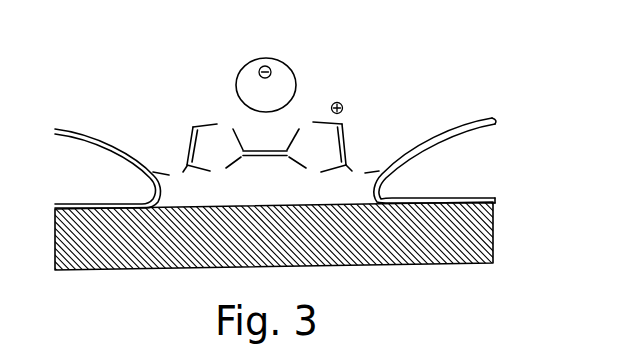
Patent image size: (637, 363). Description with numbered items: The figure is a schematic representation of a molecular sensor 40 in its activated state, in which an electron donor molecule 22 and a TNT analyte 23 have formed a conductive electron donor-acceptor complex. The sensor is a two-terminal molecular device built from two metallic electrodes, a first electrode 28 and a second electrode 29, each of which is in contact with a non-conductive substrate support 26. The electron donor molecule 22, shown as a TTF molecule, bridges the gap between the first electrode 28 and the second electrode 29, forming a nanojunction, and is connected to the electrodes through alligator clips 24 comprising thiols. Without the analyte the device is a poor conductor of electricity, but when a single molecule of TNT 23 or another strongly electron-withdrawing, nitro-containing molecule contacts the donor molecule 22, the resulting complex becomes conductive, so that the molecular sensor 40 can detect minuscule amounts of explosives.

The electron donor molecule 22 is at (205, 101).
The TNT analyte 23 is at (287, 73).
The alligator clips 24 is at (168, 172).
The non-conductive substrate support 26 is at (278, 250).
The first electrode 28 is at (81, 128).
The second electrode 29 is at (439, 129).
The molecular sensor 40 is at (515, 80).